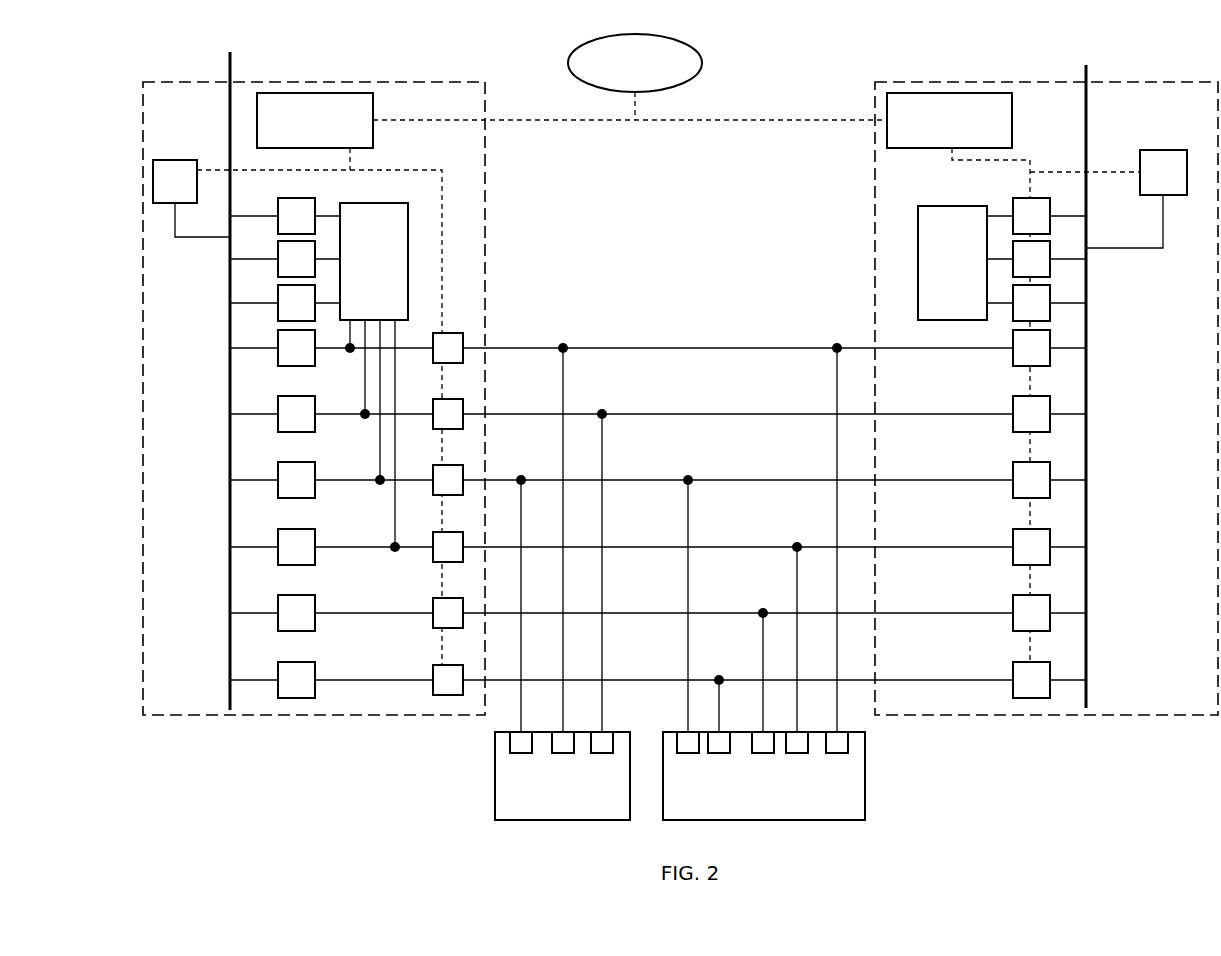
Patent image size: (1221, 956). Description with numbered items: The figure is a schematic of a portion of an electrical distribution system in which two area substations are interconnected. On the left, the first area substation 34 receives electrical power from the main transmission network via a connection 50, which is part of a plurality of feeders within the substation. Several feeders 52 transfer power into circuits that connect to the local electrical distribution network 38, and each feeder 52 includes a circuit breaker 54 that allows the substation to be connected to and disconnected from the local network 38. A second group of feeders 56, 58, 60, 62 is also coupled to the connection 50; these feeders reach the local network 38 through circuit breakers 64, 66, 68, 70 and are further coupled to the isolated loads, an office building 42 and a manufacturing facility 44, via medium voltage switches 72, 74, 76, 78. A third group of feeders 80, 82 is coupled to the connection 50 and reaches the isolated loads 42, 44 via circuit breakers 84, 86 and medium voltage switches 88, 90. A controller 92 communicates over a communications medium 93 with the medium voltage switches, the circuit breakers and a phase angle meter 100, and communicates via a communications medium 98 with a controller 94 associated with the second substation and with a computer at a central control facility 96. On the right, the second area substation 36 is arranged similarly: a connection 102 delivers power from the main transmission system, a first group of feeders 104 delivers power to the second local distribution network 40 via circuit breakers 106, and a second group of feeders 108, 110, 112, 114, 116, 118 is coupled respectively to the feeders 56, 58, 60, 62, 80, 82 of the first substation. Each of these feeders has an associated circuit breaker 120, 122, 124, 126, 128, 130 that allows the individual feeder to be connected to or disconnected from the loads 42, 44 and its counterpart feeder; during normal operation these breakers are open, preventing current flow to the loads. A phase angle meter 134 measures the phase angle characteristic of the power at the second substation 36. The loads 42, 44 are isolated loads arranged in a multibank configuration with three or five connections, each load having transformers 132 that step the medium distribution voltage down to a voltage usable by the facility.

The area substation 34 is at (186, 718).
The second area substation 36 is at (1060, 721).
The local electrical distribution network 38 is at (361, 377).
The second local distribution network 40 is at (965, 263).
The office building (isolated load) 42 is at (495, 778).
The manufacturing facility (isolated load) 44 is at (865, 778).
The connection 50 is at (229, 72).
The feeders 52 is at (278, 216).
The circuit breaker 54 is at (278, 222).
The feeder 56 is at (252, 348).
The feeder 58 is at (252, 414).
The feeder 60 is at (252, 480).
The feeder 62 is at (252, 547).
The circuit breaker 64 is at (305, 366).
The circuit breaker 66 is at (305, 432).
The circuit breaker 68 is at (305, 498).
The circuit breaker 70 is at (305, 565).
The medium voltage switch 72 is at (463, 343).
The medium voltage switch 74 is at (463, 409).
The medium voltage switch 76 is at (463, 475).
The medium voltage switch 78 is at (433, 553).
The feeder 80 is at (252, 613).
The feeder 82 is at (252, 680).
The circuit breaker 84 is at (305, 631).
The circuit breaker 86 is at (315, 685).
The medium voltage switch 88 is at (433, 619).
The medium voltage switch 90 is at (433, 686).
The controller 92 is at (315, 93).
The communications medium 93 is at (400, 170).
The controller 94 is at (950, 93).
The central control facility 96 is at (702, 63).
The communications medium 98 is at (598, 122).
The phase angle meter 100 is at (175, 160).
The connection 102 is at (1087, 74).
The first group of feeders 104 is at (1065, 220).
The circuit breakers 106 is at (1013, 255).
The feeder 108 is at (1065, 350).
The feeder 110 is at (1065, 416).
The feeder 112 is at (1065, 482).
The feeder 114 is at (1065, 549).
The feeder 116 is at (1065, 615).
The feeder 118 is at (1068, 680).
The circuit breaker 120 is at (1013, 362).
The circuit breaker 122 is at (1013, 428).
The circuit breaker 124 is at (1013, 494).
The circuit breaker 126 is at (1013, 561).
The circuit breaker 128 is at (1013, 627).
The circuit breaker 130 is at (1013, 694).
The transformers 132 is at (521, 753).
The phase angle meter 134 is at (1163, 150).